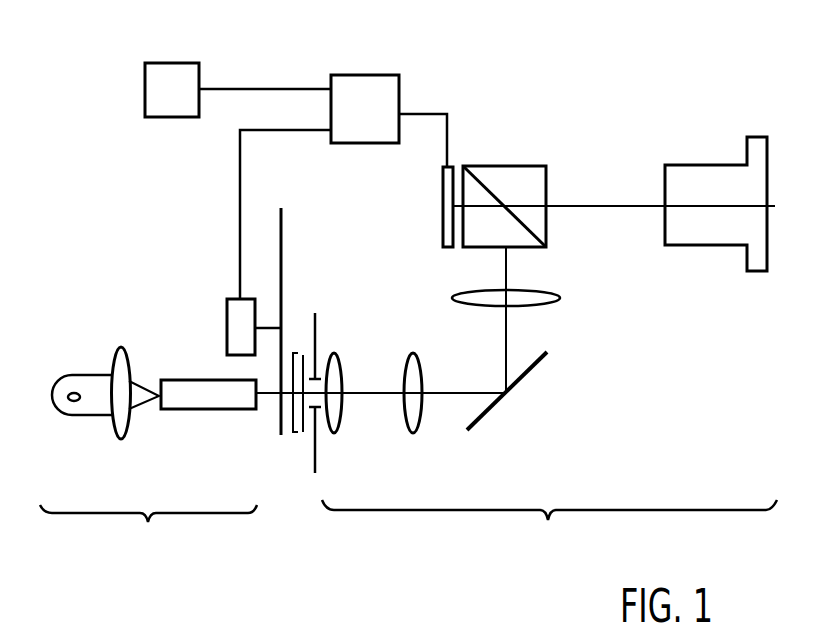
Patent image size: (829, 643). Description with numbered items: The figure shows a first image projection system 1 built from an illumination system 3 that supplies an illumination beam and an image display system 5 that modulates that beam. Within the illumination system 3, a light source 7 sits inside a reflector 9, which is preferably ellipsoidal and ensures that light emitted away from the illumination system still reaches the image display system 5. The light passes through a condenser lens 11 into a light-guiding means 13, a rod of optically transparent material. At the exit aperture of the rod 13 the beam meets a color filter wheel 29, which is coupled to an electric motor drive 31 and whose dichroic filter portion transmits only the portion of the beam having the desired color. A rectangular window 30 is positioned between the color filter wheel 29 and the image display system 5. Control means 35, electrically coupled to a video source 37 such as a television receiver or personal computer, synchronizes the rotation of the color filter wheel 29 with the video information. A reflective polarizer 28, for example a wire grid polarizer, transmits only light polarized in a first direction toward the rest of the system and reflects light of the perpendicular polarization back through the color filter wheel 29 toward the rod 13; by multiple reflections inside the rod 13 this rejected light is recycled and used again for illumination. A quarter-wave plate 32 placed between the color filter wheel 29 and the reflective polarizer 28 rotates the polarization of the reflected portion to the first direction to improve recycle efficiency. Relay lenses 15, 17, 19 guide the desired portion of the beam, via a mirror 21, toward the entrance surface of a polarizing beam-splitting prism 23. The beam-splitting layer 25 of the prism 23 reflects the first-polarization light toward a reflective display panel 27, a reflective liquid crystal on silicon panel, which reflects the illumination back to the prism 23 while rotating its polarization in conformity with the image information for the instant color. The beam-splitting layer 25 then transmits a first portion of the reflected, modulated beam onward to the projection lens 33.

The image projection system 1 is at (240, 554).
The illumination system 3 is at (148, 528).
The image display system 5 is at (549, 524).
The light source 7 is at (75, 401).
The reflector 9 is at (56, 414).
The condenser lens 11 is at (121, 440).
The light-guiding means 13 is at (208, 410).
The relay lens 15 is at (334, 433).
The relay lens 17 is at (414, 433).
The relay lens 19 is at (452, 298).
The mirror 21 is at (479, 420).
The polarizing beam-splitting prism 23 is at (532, 166).
The beam-splitting layer 25 is at (480, 182).
The reflective display panel 27 is at (443, 228).
The reflective polarizer 28 is at (296, 432).
The color filter wheel 29 is at (282, 230).
The rectangular window 30 is at (316, 321).
The electric motor drive 31 is at (227, 313).
The quarter-wave plate 32 is at (295, 353).
The projection lens 33 is at (700, 165).
The control means 35 is at (365, 75).
The video source 37 is at (170, 63).